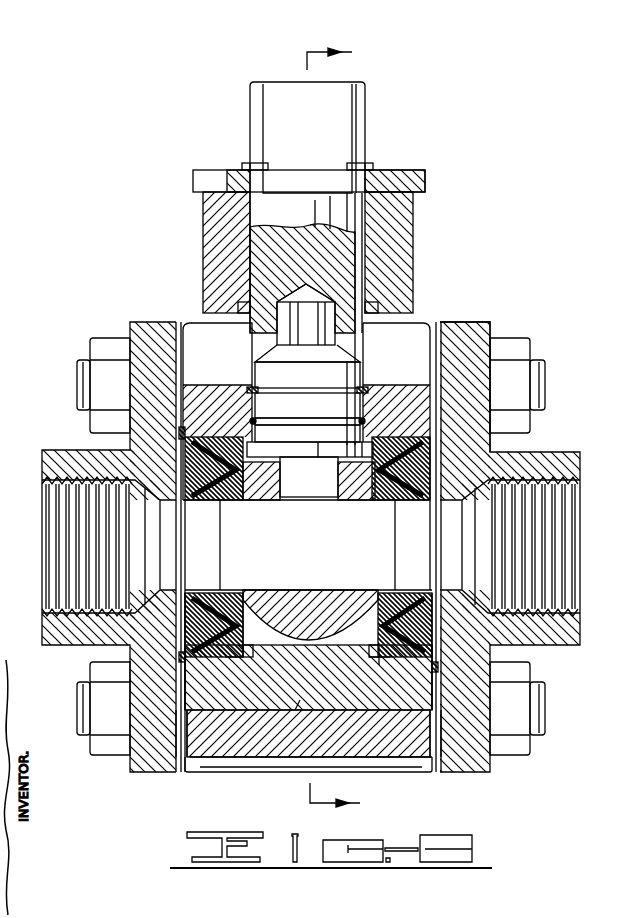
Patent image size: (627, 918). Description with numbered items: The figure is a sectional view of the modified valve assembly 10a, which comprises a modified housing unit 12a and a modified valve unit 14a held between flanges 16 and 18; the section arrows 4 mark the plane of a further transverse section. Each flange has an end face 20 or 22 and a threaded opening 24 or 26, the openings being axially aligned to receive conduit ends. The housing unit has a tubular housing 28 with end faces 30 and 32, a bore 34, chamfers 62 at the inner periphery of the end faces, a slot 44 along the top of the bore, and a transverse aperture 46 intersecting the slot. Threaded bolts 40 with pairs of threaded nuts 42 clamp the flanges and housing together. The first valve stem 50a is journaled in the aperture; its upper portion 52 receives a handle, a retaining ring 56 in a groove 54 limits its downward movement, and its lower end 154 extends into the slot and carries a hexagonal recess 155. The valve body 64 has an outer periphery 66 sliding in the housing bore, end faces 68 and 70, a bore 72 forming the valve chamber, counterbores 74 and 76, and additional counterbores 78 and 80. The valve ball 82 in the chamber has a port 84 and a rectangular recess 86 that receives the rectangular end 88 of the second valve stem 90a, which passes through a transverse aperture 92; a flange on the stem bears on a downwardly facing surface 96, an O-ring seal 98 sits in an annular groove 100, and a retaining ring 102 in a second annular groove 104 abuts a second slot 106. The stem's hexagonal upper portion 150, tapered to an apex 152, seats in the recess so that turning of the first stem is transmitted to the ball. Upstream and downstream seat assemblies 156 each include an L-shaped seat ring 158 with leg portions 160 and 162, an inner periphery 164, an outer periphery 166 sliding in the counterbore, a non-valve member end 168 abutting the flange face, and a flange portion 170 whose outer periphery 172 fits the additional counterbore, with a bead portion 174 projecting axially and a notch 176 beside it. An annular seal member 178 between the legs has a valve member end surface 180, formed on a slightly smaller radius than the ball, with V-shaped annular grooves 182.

The section line 4- 4 is at (342, 430).
The modified valve assembly 10a is at (436, 191).
The modified housing unit 12a is at (420, 291).
The modified valve unit 14a is at (446, 382).
The flange 16 is at (150, 766).
The flange 18 is at (490, 772).
The end face 20 is at (186, 769).
The end face 22 is at (443, 768).
The threaded opening 24 is at (68, 508).
The threaded opening 26 is at (580, 603).
The tubular housing 28 is at (405, 240).
The end face 30 is at (176, 733).
The end face 32 is at (437, 727).
The bore 34 is at (335, 712).
The threaded bolts 40 is at (76, 387).
The threaded nuts 42 is at (100, 343).
The slot 44 is at (218, 357).
The aperture 46 is at (255, 210).
The first valve stem 50a is at (262, 238).
The upper portion 52 is at (342, 115).
The groove 54 is at (268, 170).
The retaining ring 56 is at (245, 163).
The chamfers 62 is at (192, 728).
The valve body 64 is at (353, 714).
The outer periphery 66 is at (300, 690).
The end face 68 is at (176, 697).
The end face 70 is at (438, 693).
The bore 72 is at (354, 655).
The counterbore 74 is at (226, 674).
The counterbore 76 is at (336, 671).
The counterbore 78 is at (188, 693).
The counterbore 80 is at (434, 708).
The valve ball 82 is at (321, 607).
The port 84 is at (322, 555).
The rectangular recess 86 is at (340, 460).
The rectangular end 88 is at (302, 480).
The second valve stem 90a is at (366, 410).
The aperture 92 is at (252, 404).
The downwardly facing surface 96 is at (362, 436).
The O-ring seal 98 is at (250, 421).
The annular groove 100 is at (324, 414).
The retaining ring 102 is at (252, 387).
The second annular groove 104 is at (326, 384).
The second slot 106 is at (365, 389).
The upper portion 150 is at (312, 352).
The apex 152 is at (305, 283).
The lower end 154 is at (228, 322).
The recess 155 is at (340, 326).
The seat assemblies 156 is at (247, 463).
The seat ring 158 is at (428, 640).
The leg portion 160 is at (257, 617).
The leg portion 162 is at (204, 595).
The inner periphery 164 is at (192, 582).
The outer periphery 166 is at (238, 654).
The non-valve member end 168 is at (434, 622).
The flange portion 170 is at (423, 661).
The outer periphery 172 is at (413, 682).
The bead portion 174 is at (179, 433).
The notch 176 is at (176, 643).
The annular seal member 178 is at (380, 611).
The valve member end surface 180 is at (395, 478).
The annular grooves 182 is at (240, 602).